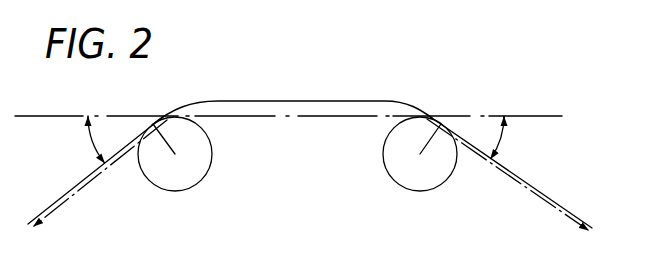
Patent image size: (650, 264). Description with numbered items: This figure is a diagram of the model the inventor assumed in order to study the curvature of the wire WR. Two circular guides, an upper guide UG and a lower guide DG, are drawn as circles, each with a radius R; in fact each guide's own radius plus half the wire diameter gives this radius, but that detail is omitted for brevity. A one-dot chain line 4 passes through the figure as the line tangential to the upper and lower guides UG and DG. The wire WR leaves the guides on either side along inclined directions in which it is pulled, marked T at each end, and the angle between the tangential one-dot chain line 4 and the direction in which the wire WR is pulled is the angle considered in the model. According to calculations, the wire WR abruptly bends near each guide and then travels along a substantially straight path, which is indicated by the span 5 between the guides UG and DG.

The one-dot chain line 4 is at (296, 120).
The substantially straight path 5 is at (379, 86).
The wire WR is at (292, 94).
The lower guide DG is at (181, 186).
The upper guide UG is at (428, 182).
The radius R is at (297, 139).
The wire tension T is at (309, 183).